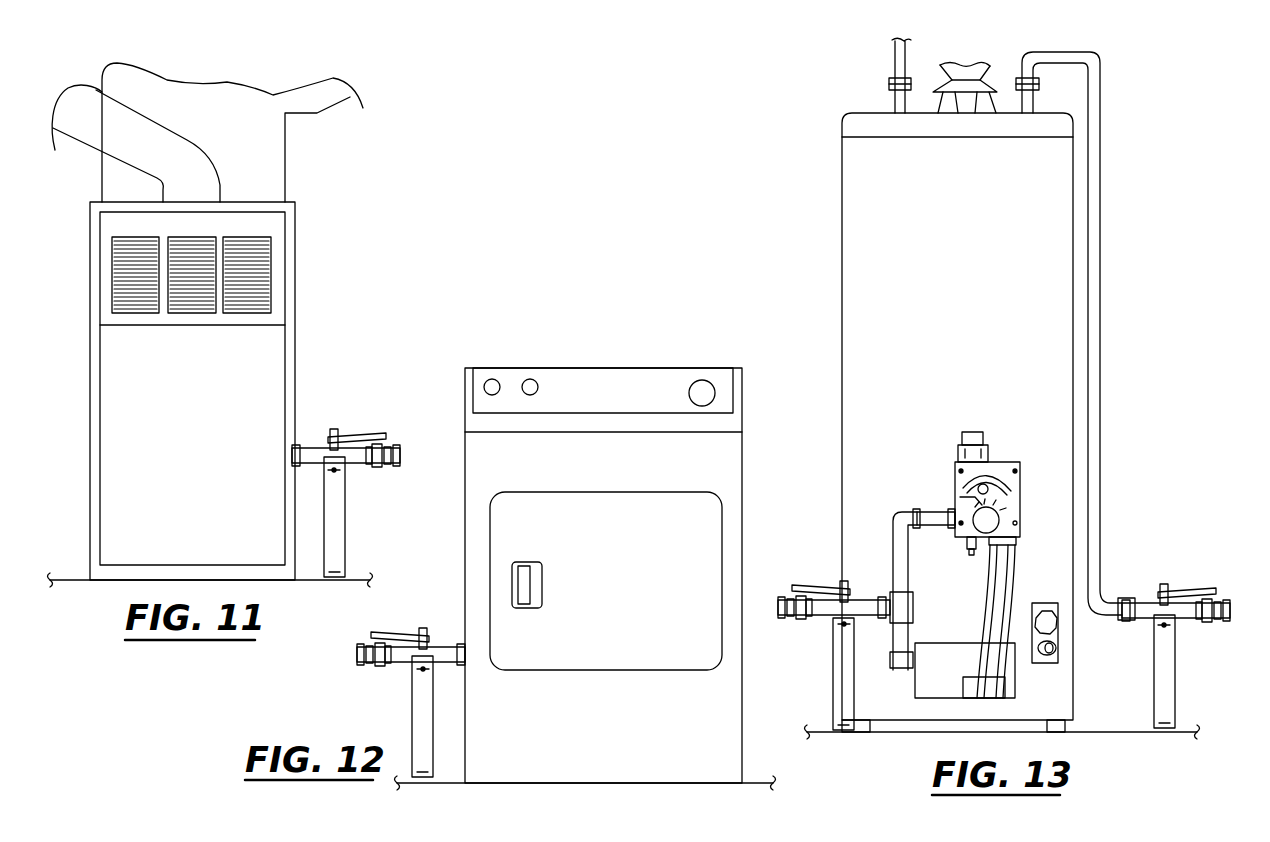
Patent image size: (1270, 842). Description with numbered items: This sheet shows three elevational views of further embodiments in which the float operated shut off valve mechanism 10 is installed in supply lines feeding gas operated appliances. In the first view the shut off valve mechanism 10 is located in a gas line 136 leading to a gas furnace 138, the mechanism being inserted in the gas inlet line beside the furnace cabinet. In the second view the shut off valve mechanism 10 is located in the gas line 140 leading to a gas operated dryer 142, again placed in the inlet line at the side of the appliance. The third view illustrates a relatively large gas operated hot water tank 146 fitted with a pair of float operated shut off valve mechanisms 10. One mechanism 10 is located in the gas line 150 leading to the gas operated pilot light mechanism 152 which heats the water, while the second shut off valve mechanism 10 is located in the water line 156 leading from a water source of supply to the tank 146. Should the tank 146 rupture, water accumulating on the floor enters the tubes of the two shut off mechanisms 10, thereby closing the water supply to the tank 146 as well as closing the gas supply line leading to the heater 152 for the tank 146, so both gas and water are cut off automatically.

In FIG. 13, the shut off valve mechanism 10 is at (1002, 618).
In FIG. 11, the gas line 136 is at (322, 443).
In FIG. 11, the gas furnace 138 is at (112, 377).
In FIG. 12, the gas line 140 is at (441, 656).
In FIG. 12, the gas operated dryer 142 is at (743, 727).
In FIG. 13, the hot water tank 146 is at (866, 280).
In FIG. 13, the gas line 150 is at (858, 598).
In FIG. 13, the pilot light mechanism 152 is at (955, 482).
In FIG. 13, the water line 156 is at (1145, 600).